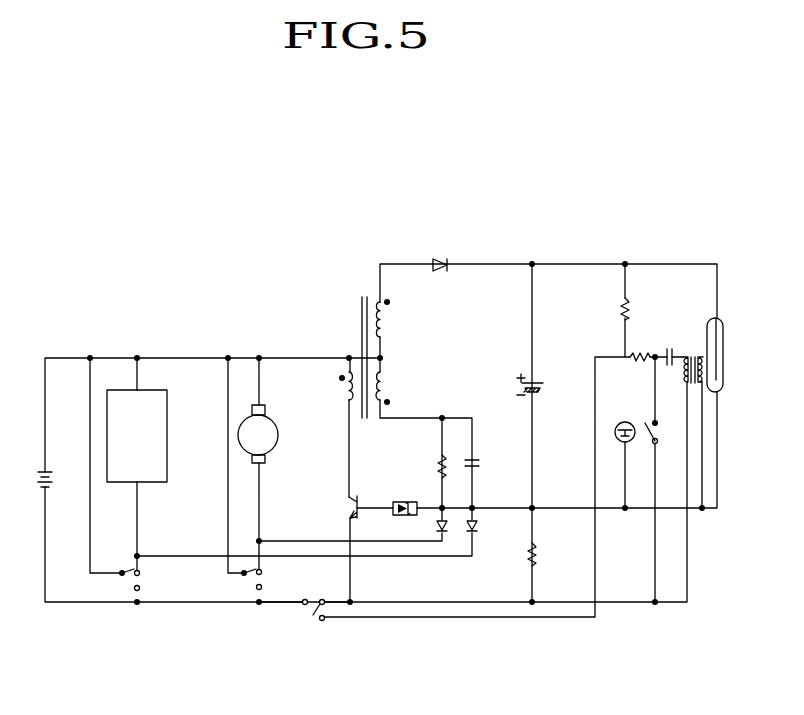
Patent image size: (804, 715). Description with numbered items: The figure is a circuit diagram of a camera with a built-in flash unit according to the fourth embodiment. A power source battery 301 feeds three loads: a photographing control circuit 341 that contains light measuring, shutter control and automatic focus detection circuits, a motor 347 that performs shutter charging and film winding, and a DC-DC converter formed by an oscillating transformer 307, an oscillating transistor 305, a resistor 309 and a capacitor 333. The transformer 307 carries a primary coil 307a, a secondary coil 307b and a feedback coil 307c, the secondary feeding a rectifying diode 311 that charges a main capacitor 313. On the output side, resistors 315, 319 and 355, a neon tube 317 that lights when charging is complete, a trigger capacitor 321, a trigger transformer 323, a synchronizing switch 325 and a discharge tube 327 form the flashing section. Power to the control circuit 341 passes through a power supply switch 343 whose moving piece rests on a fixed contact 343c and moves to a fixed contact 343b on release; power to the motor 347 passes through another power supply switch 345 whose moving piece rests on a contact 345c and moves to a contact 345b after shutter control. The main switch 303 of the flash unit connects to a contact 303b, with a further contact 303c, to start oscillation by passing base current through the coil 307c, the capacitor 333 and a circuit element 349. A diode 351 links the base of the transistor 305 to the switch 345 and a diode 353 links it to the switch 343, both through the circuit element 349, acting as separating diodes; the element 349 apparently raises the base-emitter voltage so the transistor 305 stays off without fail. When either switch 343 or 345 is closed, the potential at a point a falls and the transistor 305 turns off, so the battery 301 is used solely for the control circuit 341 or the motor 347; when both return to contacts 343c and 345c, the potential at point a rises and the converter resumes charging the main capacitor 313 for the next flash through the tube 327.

The power source battery 301 is at (50, 472).
The main switch 303 is at (316, 616).
The contact 303b is at (303, 606).
The switch contact 303c is at (326, 621).
The oscillating transistor 305 is at (348, 504).
The oscillating transformer 307 is at (361, 297).
The primary winding 307a is at (341, 392).
The secondary winding 307b is at (388, 320).
The coil 307c is at (391, 394).
The resistor 309 is at (437, 460).
The rectifying diode 311 is at (440, 262).
The main capacitor 313 is at (546, 384).
The resistor 315 is at (621, 304).
The neon tube 317 is at (619, 448).
The resistor 319 is at (639, 350).
The trigger capacitor 321 is at (682, 334).
The trigger transformer 323 is at (698, 392).
The synchronizing switch 325 is at (660, 432).
The discharge tube 327 is at (722, 318).
The capacitor 333 is at (478, 464).
The photographing control circuit 341 is at (167, 420).
The power supply switch 343 is at (128, 578).
The fixed contact 343b is at (135, 594).
The fixed contact 343c is at (122, 570).
The power supply switch 345 is at (245, 584).
The contact 345b is at (262, 589).
The contact 345c is at (243, 570).
The motor 347 is at (278, 440).
The circuit element 349 is at (406, 502).
The diode 351 is at (438, 534).
The diode 353 is at (476, 530).
The resistor 355 is at (539, 556).
The point a is at (474, 506).